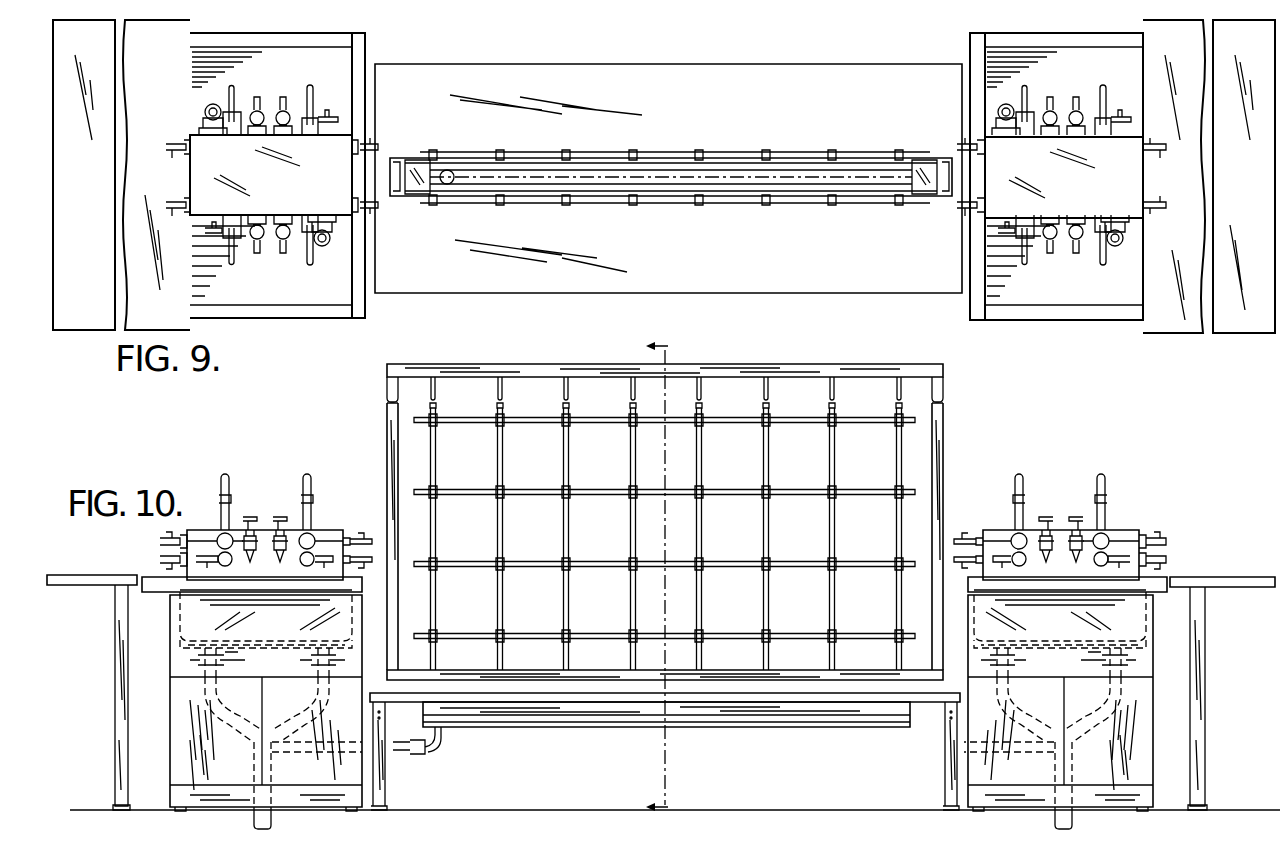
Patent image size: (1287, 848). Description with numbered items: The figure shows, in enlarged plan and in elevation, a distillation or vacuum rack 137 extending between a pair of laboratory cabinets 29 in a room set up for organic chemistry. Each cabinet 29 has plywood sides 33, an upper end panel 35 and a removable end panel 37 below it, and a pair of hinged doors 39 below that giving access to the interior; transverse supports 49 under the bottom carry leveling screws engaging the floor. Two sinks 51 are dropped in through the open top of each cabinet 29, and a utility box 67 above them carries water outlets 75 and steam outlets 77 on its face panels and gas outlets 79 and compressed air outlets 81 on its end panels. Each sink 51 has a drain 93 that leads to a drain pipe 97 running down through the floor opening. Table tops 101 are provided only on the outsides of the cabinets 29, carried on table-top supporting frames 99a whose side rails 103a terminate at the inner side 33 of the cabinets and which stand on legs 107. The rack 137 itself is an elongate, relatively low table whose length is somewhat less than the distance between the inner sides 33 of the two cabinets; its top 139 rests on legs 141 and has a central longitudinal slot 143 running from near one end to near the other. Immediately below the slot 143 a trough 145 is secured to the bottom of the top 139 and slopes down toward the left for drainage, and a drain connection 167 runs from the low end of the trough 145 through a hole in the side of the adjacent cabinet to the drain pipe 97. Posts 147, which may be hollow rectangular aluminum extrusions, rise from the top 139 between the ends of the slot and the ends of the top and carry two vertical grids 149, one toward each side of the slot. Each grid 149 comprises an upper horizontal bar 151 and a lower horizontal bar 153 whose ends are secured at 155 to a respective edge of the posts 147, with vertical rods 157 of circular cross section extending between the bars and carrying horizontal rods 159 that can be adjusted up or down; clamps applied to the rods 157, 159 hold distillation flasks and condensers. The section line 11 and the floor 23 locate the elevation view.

In FIG. 10, the section line 11- 11 is at (674, 576).
In FIG. 10, the floor 23 is at (102, 808).
In FIG. 9, the cabinet 29 is at (290, 318).
In FIG. 10, the cabinet 29 is at (169, 793).
In FIG. 10, the sides 33 is at (362, 658).
In FIG. 10, the upper end panel 35 is at (178, 620).
In FIG. 10, the end panel 37 is at (195, 658).
In FIG. 10, the hinged doors 39 is at (180, 720).
In FIG. 10, the transverse supports 49 is at (293, 803).
In FIG. 9, the sink 51 is at (266, 47).
In FIG. 9, the utility box 67 is at (1000, 260).
In FIG. 10, the utility box 67 is at (334, 532).
In FIG. 9, the water outlets 75 is at (233, 89).
In FIG. 10, the water outlets 75 is at (226, 478).
In FIG. 9, the steam outlets 77 is at (259, 98).
In FIG. 10, the steam outlets 77 is at (281, 516).
In FIG. 9, the gas outlets 79 is at (173, 203).
In FIG. 10, the gas outlets 79 is at (168, 543).
In FIG. 10, the compressed air outlets 81 is at (168, 565).
In FIG. 9, the drain 93 is at (206, 108).
In FIG. 10, the drain pipe 97 is at (254, 775).
In FIG. 10, the table-top supporting frame 99a is at (115, 731).
In FIG. 9, the table top 101 is at (85, 320).
In FIG. 10, the table top 101 is at (102, 575).
In FIG. 10, the side rails 103a is at (242, 592).
In FIG. 10, the legs 107 is at (117, 682).
In FIG. 9, the distillation or vacuum rack 137 is at (464, 289).
In FIG. 10, the distillation or vacuum rack 137 is at (511, 365).
In FIG. 10, the top 139 is at (602, 705).
In FIG. 10, the legs 141 is at (383, 790).
In FIG. 9, the central longitudinal slot 143 is at (808, 197).
In FIG. 9, the trough 145 is at (735, 197).
In FIG. 10, the trough 145 is at (517, 728).
In FIG. 9, the posts 147 is at (392, 178).
In FIG. 10, the posts 147 is at (389, 440).
In FIG. 9, the vertical grid 149 is at (668, 153).
In FIG. 10, the vertical grid 149 is at (903, 456).
In FIG. 10, the upper horizontal bar 151 is at (759, 364).
In FIG. 10, the lower horizontal bar 153 is at (795, 670).
In FIG. 10, the securement of bar ends 155 is at (393, 370).
In FIG. 9, the vertical rods 157 is at (504, 150).
In FIG. 10, the vertical rods 157 is at (498, 527).
In FIG. 9, the horizontal rods 159 is at (588, 152).
In FIG. 10, the horizontal rods 159 is at (522, 424).
In FIG. 10, the drain connection 167 is at (437, 742).